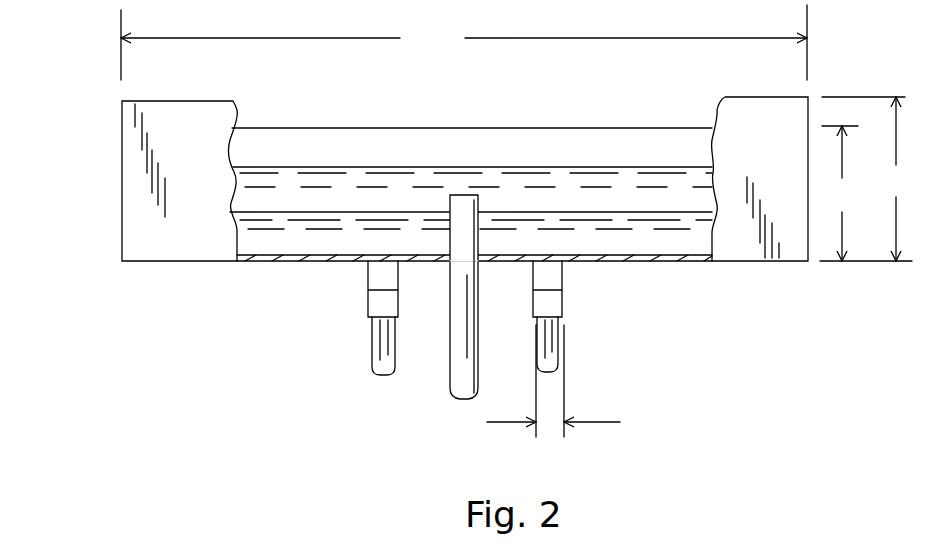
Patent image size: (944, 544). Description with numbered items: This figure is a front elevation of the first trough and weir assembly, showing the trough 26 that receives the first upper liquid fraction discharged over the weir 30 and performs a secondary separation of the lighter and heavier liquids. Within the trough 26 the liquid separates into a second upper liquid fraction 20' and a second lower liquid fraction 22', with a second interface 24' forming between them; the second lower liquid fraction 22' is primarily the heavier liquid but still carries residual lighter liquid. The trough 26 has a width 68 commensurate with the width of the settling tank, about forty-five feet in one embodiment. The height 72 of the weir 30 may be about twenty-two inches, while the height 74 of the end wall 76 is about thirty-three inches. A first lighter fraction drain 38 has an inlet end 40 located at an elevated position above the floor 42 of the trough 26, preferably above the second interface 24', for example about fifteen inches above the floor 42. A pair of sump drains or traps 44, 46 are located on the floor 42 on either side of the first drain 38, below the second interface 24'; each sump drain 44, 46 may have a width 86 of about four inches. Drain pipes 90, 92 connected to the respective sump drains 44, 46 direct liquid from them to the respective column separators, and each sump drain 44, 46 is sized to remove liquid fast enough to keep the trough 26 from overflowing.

The trough 26 is at (102, 96).
The width 68 is at (464, 42).
The second interface 24' is at (476, 135).
The second upper liquid fraction 20' is at (472, 123).
The inlet end 40 is at (462, 195).
The second lower liquid fraction 22' is at (471, 150).
The weir 30 is at (650, 128).
The end wall 76 is at (770, 152).
The height of the weir 72 is at (841, 193).
The height of the end wall 74 is at (867, 179).
The sump drain 44 is at (368, 288).
The sump drain 46 is at (562, 305).
The floor 42 is at (665, 262).
The drain pipe 90 is at (372, 357).
The drain pipe 92 is at (560, 352).
The first lighter fraction drain 38 is at (450, 398).
The width 86 is at (600, 423).